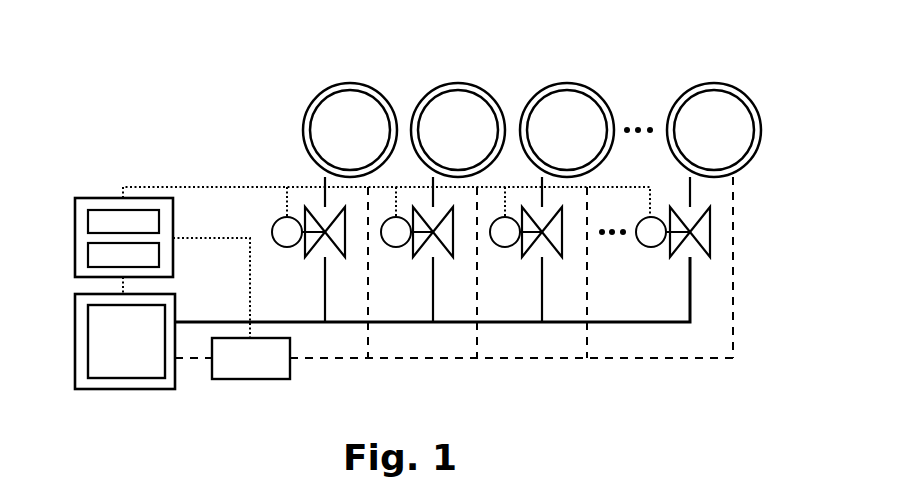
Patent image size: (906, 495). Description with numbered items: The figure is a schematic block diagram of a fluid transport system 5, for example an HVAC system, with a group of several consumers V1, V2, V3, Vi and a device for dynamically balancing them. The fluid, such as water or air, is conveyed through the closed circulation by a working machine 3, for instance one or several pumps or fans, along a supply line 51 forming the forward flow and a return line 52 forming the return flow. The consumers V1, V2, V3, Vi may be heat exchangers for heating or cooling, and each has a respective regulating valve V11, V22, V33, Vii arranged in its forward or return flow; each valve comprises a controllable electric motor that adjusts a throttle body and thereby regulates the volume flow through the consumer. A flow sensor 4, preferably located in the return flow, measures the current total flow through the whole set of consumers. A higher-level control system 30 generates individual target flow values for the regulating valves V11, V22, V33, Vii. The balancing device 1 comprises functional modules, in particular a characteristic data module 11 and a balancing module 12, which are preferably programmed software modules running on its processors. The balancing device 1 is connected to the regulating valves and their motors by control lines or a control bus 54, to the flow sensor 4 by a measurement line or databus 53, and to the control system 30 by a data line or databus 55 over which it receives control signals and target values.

The balancing device 1 is at (85, 205).
The characteristic data module 11 is at (90, 228).
The balancing module 12 is at (90, 258).
The working machine 3 is at (90, 355).
The higher-level control system 30 is at (93, 385).
The flow sensor 4 is at (230, 370).
The fluid transport system 5 is at (223, 160).
The supply line 51 is at (432, 289).
The return line 52 is at (454, 300).
The measurement line or databus 53 is at (213, 271).
The control lines or control bus 54 is at (386, 182).
The data line or databus 55 is at (77, 296).
The consumer V1 is at (310, 90).
The consumer V2 is at (420, 90).
The consumer V3 is at (530, 90).
The consumer Vi is at (673, 90).
The regulating valve V11 is at (310, 262).
The regulating valve V22 is at (421, 262).
The regulating valve V33 is at (531, 262).
The regulating valve Vii is at (675, 262).